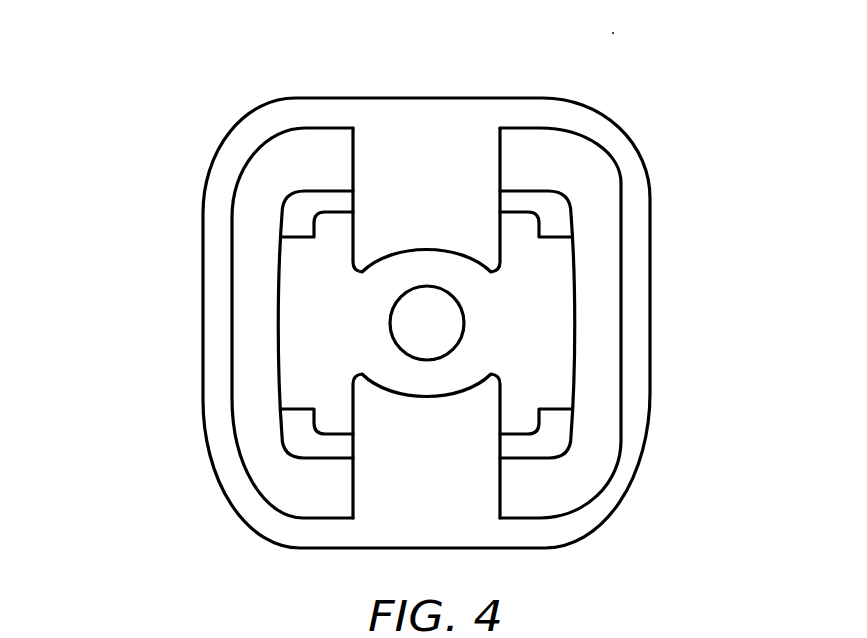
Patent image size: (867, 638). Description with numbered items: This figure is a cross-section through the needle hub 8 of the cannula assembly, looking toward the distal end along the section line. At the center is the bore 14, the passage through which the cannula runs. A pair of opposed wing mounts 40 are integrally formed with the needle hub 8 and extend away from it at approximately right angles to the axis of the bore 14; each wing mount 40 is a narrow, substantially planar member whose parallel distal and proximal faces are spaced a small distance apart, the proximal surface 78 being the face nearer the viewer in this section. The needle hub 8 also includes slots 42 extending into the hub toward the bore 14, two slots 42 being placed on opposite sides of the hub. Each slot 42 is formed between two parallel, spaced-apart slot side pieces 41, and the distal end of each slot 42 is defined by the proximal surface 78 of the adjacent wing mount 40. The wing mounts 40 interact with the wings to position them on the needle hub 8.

The needle hub 8 is at (174, 302).
The bore 14 is at (402, 329).
The wing mounts 40 is at (598, 241).
The slot side pieces 41 is at (337, 227).
The slot 42 is at (422, 160).
The proximal surface 78 is at (605, 343).